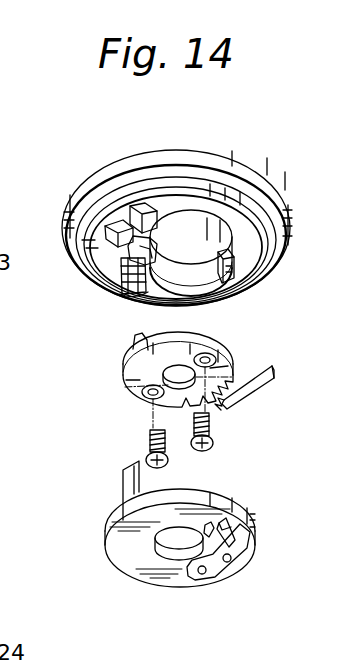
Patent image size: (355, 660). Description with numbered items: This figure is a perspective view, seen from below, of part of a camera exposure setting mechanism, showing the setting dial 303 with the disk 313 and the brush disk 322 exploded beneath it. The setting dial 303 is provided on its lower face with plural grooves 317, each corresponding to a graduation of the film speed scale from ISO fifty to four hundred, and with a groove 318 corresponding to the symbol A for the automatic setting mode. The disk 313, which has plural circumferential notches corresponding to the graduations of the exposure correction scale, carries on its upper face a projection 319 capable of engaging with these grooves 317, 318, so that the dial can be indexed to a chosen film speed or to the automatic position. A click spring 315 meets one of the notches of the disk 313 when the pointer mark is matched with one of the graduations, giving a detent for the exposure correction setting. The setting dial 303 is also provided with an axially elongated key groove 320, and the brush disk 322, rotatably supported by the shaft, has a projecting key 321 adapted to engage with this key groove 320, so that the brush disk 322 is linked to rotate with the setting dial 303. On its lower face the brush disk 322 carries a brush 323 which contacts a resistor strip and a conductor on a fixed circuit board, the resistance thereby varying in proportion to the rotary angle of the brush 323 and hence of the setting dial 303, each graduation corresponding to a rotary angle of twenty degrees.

The setting dial 303 is at (288, 212).
The disk 313 is at (238, 352).
The click spring 315 is at (266, 383).
The grooves 317 is at (128, 290).
The groove 318 is at (230, 256).
The projection 319 is at (136, 341).
The key groove 320 is at (66, 250).
The key 321 is at (128, 485).
The brush disk 322 is at (255, 528).
The brush 323 is at (235, 557).